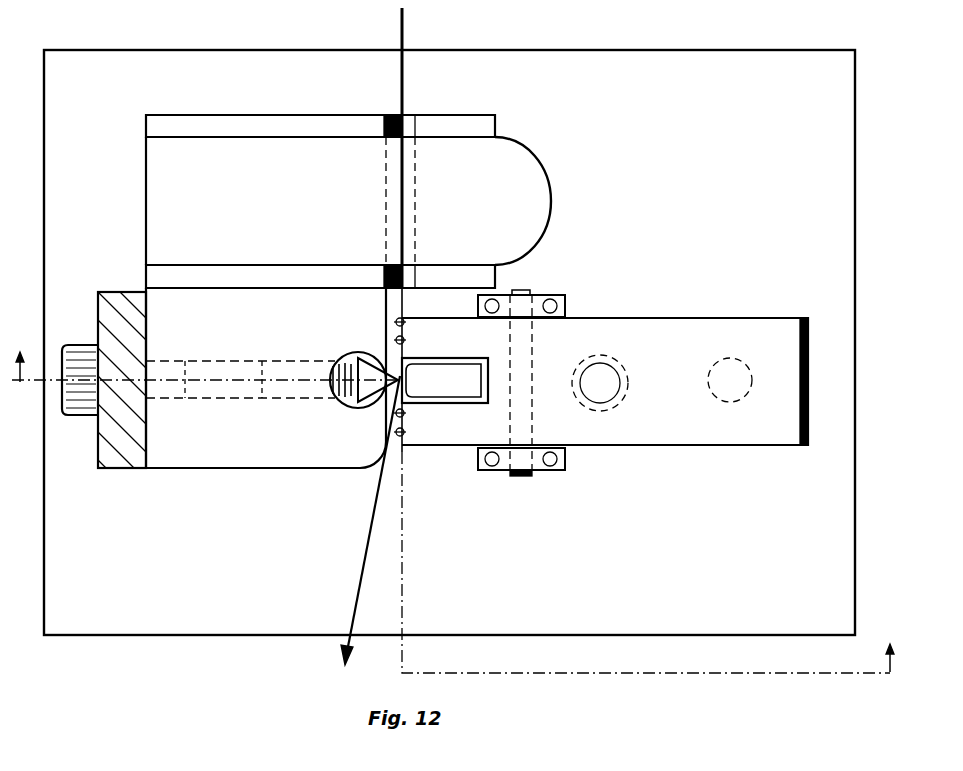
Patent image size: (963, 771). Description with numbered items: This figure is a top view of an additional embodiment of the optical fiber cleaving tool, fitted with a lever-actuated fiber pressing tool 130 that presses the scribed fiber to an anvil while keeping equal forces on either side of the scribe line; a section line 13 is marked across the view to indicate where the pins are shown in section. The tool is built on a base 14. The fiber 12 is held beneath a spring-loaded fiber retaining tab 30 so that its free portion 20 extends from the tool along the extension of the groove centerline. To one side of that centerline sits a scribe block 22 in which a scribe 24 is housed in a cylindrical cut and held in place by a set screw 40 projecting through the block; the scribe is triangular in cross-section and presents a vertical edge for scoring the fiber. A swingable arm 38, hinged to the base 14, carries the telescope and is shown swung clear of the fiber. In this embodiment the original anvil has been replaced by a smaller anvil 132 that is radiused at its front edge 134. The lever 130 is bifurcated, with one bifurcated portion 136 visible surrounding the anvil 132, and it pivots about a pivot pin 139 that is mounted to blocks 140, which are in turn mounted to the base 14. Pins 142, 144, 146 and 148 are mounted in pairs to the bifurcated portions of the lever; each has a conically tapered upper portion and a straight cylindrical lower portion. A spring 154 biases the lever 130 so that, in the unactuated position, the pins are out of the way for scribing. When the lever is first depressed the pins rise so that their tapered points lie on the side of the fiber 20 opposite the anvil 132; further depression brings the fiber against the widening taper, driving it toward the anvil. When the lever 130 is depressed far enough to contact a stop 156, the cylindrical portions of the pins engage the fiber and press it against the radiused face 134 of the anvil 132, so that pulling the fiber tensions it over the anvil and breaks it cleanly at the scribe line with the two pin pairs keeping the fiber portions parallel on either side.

The fiber 12 is at (402, 84).
The section line 13- 13 is at (457, 529).
The base 14 is at (724, 175).
The free portion of the fiber 20 is at (356, 575).
The scribe block 22 is at (215, 470).
The scribe 24 is at (374, 355).
The fiber retaining tab 30 is at (527, 217).
The swingable arm 38 is at (108, 470).
The set screw 40 is at (216, 402).
The lever-actuated fiber pressing tool 130 is at (625, 319).
The anvil 132 is at (462, 400).
The radiused front edge 134 is at (418, 372).
The bifurcated portion of the lever 136 is at (463, 316).
The pivot pin 139 is at (520, 478).
The blocks 140 is at (545, 295).
The pin 142 is at (405, 322).
The pin 144 is at (405, 340).
The pin 146 is at (405, 413).
The pin 148 is at (405, 432).
The spring 154 is at (618, 370).
The stop 156 is at (716, 392).